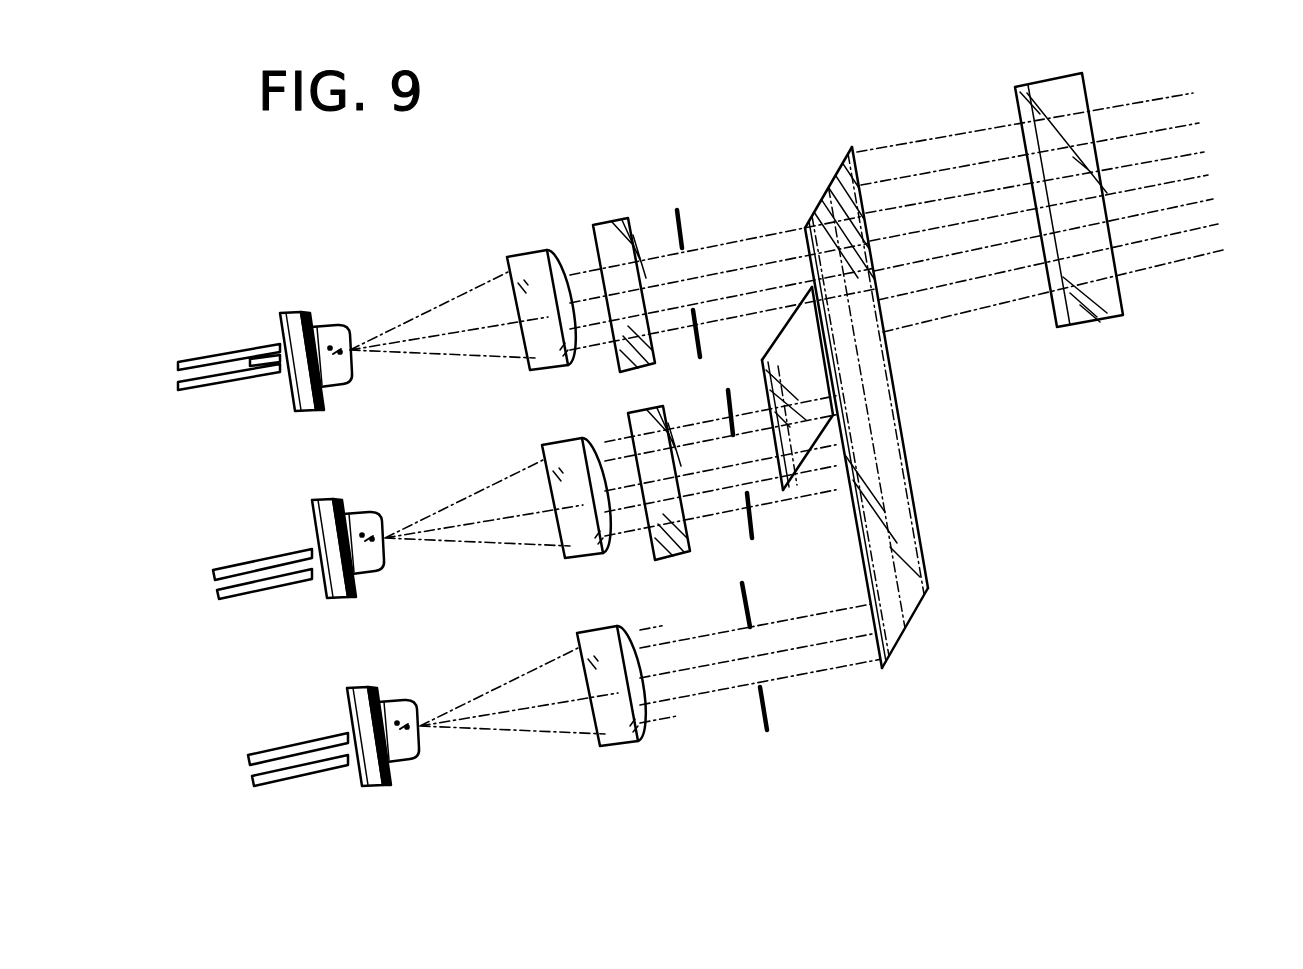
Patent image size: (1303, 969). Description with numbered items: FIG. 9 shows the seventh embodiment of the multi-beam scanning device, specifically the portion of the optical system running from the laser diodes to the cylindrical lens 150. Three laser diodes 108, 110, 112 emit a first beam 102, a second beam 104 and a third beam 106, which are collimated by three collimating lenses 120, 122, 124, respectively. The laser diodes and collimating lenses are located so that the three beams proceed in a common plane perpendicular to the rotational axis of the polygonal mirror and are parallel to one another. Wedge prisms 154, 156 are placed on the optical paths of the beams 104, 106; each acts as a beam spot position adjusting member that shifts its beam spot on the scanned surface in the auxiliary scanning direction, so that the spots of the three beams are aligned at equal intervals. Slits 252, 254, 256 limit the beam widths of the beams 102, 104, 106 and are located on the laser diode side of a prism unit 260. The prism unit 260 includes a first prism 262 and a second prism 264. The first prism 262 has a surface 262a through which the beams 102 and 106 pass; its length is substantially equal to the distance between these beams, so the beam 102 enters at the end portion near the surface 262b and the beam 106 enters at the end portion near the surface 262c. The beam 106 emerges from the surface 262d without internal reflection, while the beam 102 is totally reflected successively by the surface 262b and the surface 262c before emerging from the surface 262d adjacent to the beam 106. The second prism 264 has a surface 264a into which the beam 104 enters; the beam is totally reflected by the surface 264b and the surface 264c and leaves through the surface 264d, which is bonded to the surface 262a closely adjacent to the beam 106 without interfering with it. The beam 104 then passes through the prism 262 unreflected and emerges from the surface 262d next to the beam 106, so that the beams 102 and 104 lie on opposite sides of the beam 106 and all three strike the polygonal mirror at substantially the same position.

The first beam 102 is at (505, 684).
The second beam 104 is at (470, 494).
The third beam 106 is at (436, 306).
The laser diode 108 is at (361, 780).
The laser diode 110 is at (327, 590).
The laser diode 112 is at (292, 400).
The collimating lens 120 is at (598, 740).
The collimating lens 122 is at (563, 552).
The collimating lens 124 is at (528, 362).
The cylindrical lens 150 is at (1090, 326).
The wedge prism 154 is at (657, 552).
The wedge prism 156 is at (612, 224).
The slit 252 is at (769, 720).
The slit 254 is at (750, 526).
The slit 256 is at (679, 210).
The prism unit 260 is at (901, 392).
The first prism 262 is at (882, 392).
The surface 262a is at (866, 576).
The surface 262b is at (921, 618).
The surface 262c is at (836, 172).
The surface 262d is at (888, 342).
The second prism 264 is at (849, 357).
The surface 264a is at (766, 386).
The surface 264b is at (802, 474).
The surface 264c is at (790, 318).
The surface 264d is at (838, 397).